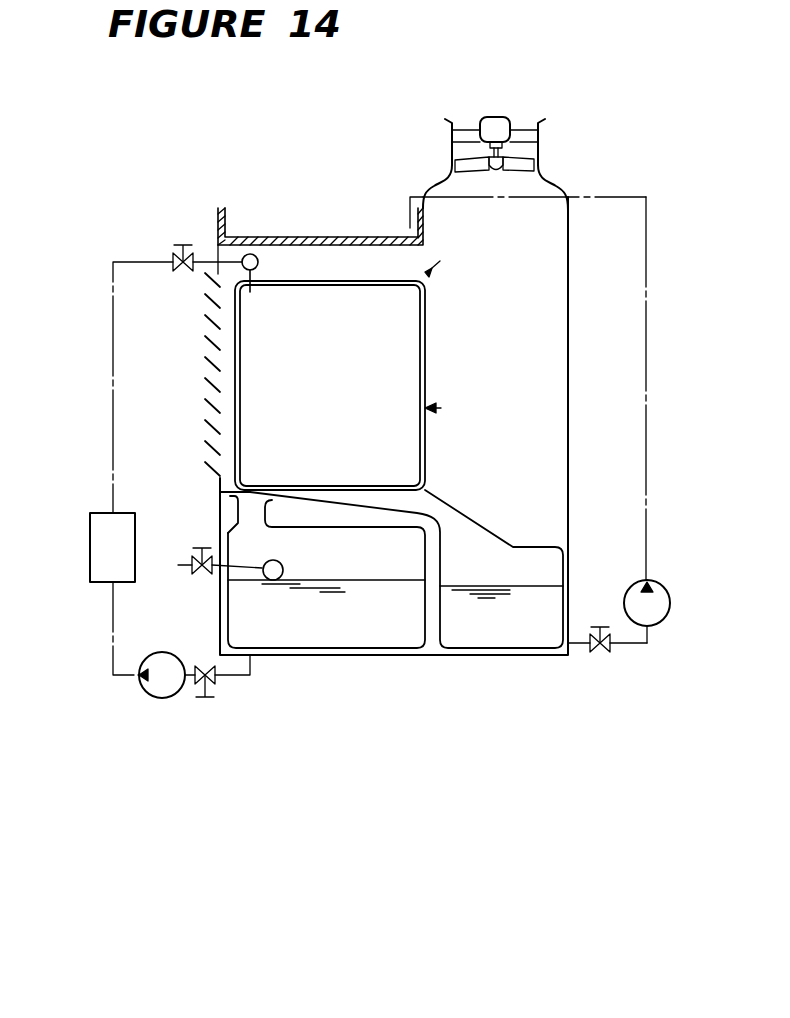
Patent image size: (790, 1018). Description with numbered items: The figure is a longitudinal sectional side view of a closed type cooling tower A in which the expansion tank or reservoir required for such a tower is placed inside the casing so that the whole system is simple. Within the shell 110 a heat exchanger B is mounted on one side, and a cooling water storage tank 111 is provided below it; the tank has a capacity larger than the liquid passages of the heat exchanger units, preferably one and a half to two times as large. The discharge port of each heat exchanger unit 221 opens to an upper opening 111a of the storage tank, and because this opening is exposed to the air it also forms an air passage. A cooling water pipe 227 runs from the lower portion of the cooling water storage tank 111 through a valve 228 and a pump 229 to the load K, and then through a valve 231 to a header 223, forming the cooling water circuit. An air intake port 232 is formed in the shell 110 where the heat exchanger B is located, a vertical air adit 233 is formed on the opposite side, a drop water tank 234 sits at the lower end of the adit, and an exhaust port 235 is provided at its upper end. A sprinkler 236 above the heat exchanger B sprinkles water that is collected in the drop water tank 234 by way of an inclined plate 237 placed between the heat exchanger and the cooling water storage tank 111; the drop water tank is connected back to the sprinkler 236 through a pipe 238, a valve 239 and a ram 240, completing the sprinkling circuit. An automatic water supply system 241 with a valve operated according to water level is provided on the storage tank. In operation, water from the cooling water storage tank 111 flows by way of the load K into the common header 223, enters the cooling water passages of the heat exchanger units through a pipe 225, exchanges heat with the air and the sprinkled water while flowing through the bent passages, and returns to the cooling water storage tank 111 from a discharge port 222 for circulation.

The shell 110 is at (568, 518).
The exhaust port 235 is at (545, 178).
The sprinkler 236 is at (267, 222).
The pipe 225 is at (253, 274).
The header 223 is at (242, 259).
The valve 231 is at (177, 243).
The cooling water pipe 227 is at (113, 396).
The heat exchanger unit 221 is at (243, 295).
The air intake port 232 is at (207, 350).
The discharge port 222 is at (220, 478).
The vertical air adit 233 is at (507, 393).
The inclined plate 237 is at (418, 512).
The upper opening 111a is at (236, 509).
The cooling water storage tank 111 is at (328, 630).
The drop water tank 234 is at (493, 630).
The automatic water supply system 241 is at (200, 576).
The load K is at (90, 543).
The pump 229 is at (140, 660).
The valve 228 is at (212, 685).
The pipe 238 is at (646, 380).
The ram 240 is at (668, 590).
The valve 239 is at (600, 652).
The cooling tower A is at (571, 425).
The heat exchanger B is at (237, 397).